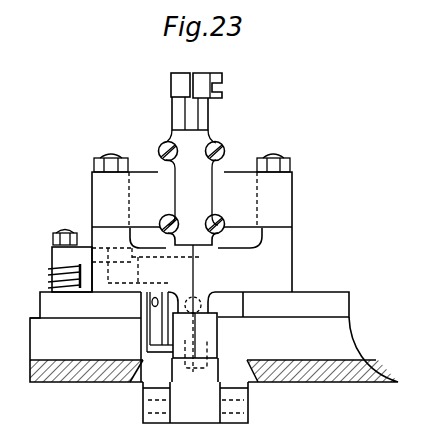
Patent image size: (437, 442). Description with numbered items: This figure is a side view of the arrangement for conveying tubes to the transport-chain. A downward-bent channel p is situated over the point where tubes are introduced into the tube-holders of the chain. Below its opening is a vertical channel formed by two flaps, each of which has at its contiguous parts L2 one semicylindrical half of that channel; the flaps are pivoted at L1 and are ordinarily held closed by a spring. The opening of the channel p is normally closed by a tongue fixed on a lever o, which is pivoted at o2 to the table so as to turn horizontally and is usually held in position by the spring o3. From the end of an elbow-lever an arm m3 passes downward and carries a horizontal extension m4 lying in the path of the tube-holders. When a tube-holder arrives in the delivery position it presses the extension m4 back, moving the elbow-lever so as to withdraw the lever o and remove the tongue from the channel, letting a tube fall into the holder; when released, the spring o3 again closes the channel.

The channel p is at (190, 120).
The pivot of the flaps L1 is at (120, 146).
The contiguous parts of the flaps L2 is at (195, 347).
The lever o is at (82, 247).
The pivot of the lever o2 is at (63, 231).
The spring o3 is at (50, 270).
The arm m3 is at (156, 331).
The horizontal extension m4 is at (160, 350).